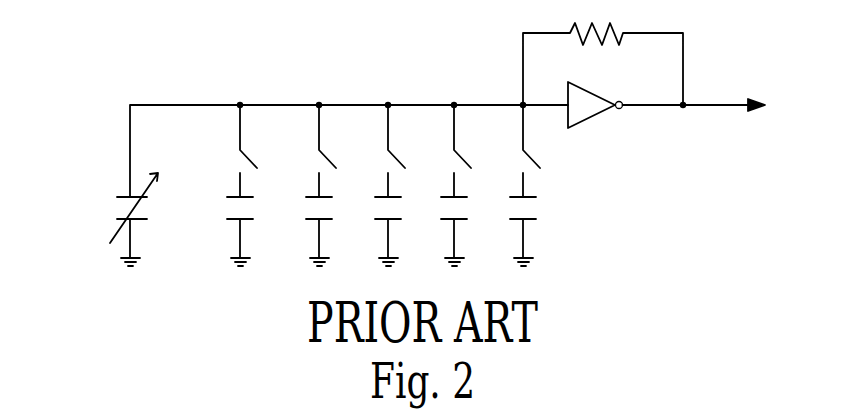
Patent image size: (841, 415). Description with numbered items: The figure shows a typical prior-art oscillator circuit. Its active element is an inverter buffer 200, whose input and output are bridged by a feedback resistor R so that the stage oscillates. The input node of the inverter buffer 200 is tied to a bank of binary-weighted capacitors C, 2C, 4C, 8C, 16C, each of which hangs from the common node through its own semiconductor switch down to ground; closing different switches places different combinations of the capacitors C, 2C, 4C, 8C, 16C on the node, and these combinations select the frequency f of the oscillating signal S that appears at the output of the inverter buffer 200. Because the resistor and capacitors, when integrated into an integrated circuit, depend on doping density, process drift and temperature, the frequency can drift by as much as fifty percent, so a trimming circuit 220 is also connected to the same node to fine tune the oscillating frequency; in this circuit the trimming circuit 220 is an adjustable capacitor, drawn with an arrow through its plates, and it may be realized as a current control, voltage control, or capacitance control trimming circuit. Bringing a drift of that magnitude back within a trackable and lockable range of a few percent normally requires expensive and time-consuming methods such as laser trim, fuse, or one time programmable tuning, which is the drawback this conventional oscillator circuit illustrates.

The trimming circuit 220 is at (112, 210).
The inverter buffer 200 is at (590, 118).
The feedback resistor R is at (603, 52).
The oscillating signal S is at (694, 92).
The capacitor 16C is at (258, 185).
The capacitor 8C is at (335, 185).
The capacitor 4C is at (403, 185).
The capacitor 2C is at (469, 185).
The capacitor C is at (537, 185).